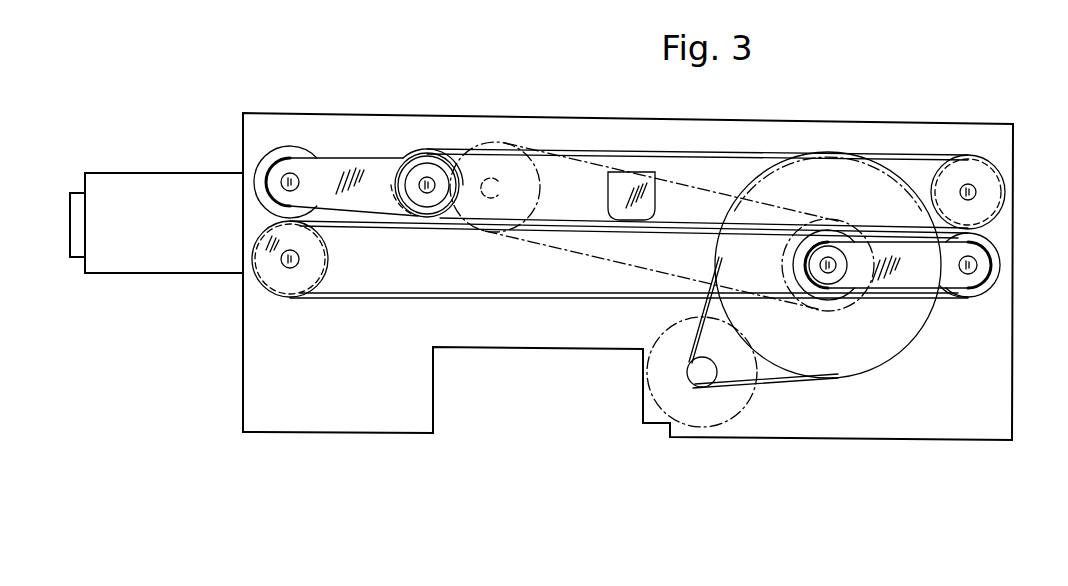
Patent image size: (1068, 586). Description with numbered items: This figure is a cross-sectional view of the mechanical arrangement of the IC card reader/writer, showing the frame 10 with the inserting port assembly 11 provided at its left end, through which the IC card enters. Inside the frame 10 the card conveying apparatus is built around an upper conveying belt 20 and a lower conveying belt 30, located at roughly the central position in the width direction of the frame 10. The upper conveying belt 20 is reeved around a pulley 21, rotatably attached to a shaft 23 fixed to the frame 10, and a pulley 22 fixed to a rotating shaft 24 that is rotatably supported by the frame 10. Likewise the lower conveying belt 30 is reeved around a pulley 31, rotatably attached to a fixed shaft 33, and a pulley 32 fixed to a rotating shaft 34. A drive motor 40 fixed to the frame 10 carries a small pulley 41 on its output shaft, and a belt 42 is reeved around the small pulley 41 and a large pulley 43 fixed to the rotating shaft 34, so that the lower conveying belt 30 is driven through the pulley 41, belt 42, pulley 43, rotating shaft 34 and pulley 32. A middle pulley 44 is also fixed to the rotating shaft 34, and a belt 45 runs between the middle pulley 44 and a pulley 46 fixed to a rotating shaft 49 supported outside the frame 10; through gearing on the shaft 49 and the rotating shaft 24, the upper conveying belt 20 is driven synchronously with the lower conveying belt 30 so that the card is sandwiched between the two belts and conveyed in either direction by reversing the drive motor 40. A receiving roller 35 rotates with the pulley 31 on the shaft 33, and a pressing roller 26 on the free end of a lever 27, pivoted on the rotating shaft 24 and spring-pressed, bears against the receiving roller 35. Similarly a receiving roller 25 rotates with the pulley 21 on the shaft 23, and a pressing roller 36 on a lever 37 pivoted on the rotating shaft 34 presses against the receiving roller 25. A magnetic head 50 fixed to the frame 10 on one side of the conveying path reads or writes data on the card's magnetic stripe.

The frame 10 is at (1013, 168).
The inserting port assembly 11 is at (182, 177).
The upper conveying belt 20 is at (700, 195).
The pulley 21 is at (968, 154).
The pulley 22 is at (446, 156).
The shaft 23 is at (977, 194).
The rotating shaft 24 is at (428, 178).
The receiving roller 25 is at (931, 180).
The pressing roller 26 is at (294, 147).
The lever 27 is at (357, 165).
The lower conveying belt 30 is at (632, 294).
The pulley 31 is at (318, 298).
The pulley 32 is at (800, 302).
The shaft 33 is at (284, 265).
The rotating shaft 34 is at (835, 273).
The receiving roller 35 is at (329, 259).
The pressing roller 36 is at (1001, 264).
The lever 37 is at (942, 289).
The drive motor 40 is at (744, 414).
The small pulley 41 is at (691, 386).
The belt 42 is at (775, 386).
The large pulley 43 is at (885, 361).
The middle pulley 44 is at (873, 288).
The belt 45 is at (777, 200).
The pulley 46 is at (537, 213).
The rotating shaft 49 is at (501, 184).
The magnetic head 50 is at (625, 172).